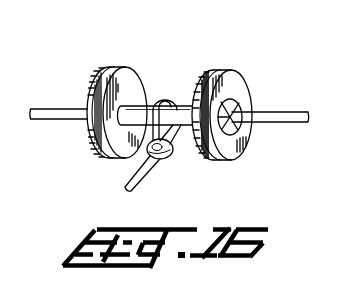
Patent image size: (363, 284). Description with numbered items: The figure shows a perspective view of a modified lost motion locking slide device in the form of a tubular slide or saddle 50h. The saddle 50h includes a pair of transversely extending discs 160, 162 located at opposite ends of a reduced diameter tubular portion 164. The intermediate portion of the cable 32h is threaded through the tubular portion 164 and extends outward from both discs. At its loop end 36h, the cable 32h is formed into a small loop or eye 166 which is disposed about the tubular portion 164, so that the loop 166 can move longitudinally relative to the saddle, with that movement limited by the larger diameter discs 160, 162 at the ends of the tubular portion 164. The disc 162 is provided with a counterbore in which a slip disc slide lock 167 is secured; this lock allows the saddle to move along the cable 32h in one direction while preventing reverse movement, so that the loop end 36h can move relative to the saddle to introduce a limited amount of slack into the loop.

The disc 160 is at (88, 97).
The slide or saddle 50h is at (102, 61).
The reduced diameter tubular portion 164 is at (137, 104).
The loop or eye 166 is at (168, 104).
The disc 162 is at (230, 72).
The hub 167 is at (231, 106).
The cable 32h is at (283, 123).
The loop end 36h is at (157, 166).